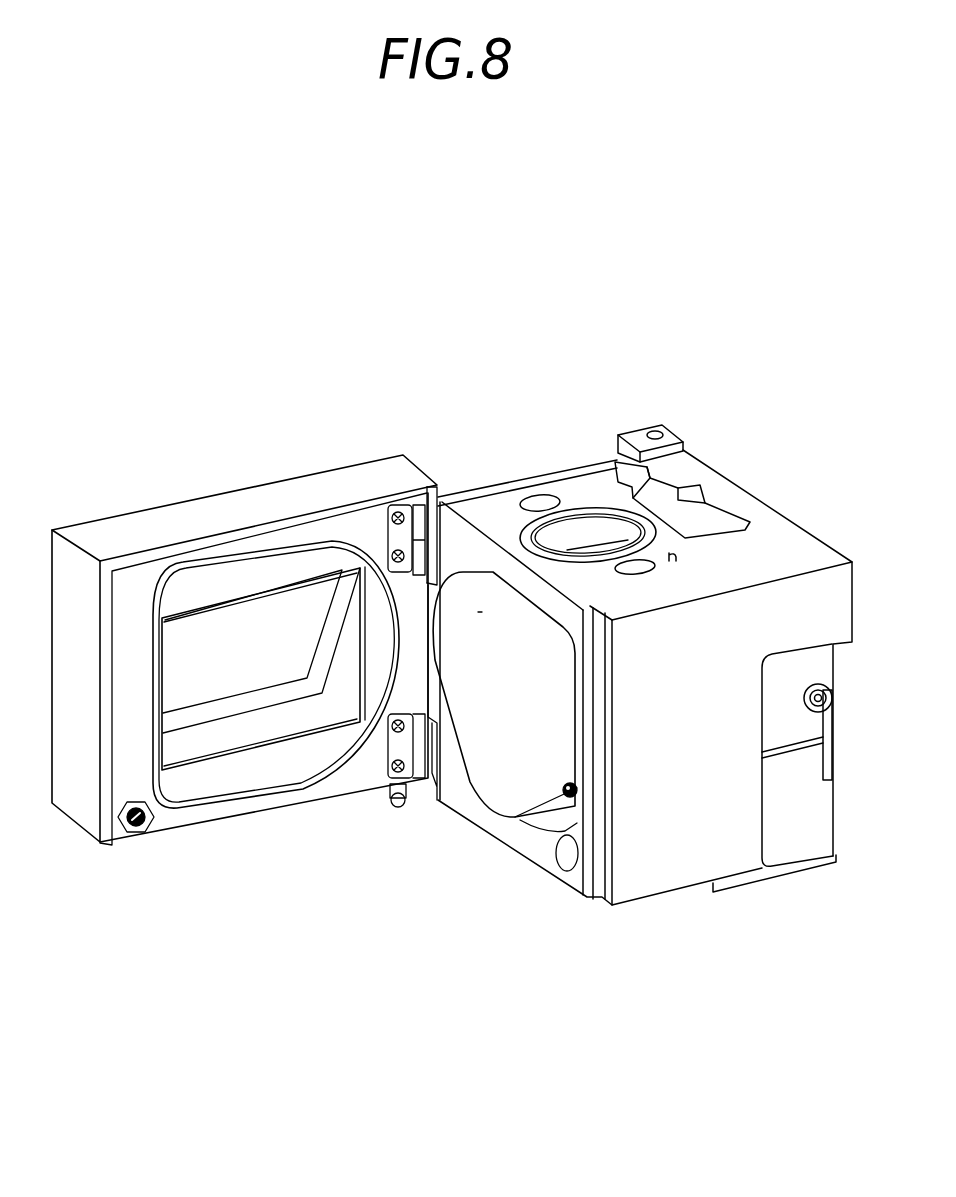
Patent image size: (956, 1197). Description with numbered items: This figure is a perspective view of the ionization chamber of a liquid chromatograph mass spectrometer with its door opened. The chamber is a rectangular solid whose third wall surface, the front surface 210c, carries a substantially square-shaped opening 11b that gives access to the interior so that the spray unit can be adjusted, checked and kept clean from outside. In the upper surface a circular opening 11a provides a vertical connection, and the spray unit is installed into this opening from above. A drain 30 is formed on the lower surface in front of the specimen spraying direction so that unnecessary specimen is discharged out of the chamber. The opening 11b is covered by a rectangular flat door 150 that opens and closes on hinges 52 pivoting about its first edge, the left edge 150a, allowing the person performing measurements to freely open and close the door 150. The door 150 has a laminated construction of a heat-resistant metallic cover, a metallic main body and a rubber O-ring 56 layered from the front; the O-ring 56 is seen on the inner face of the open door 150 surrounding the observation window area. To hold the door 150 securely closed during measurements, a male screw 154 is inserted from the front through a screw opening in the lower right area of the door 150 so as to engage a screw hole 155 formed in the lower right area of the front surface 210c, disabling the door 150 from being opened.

The circular opening 11a is at (590, 532).
The opening 11b is at (483, 607).
The third wall surface (front surface) 210c is at (513, 573).
The drain 30 is at (573, 785).
The screw hole 155 is at (568, 872).
The door 150 is at (182, 815).
The first edge (left edge) 150a is at (420, 648).
The rubber O-ring 56 is at (327, 777).
The male screw 154 is at (134, 836).
The hinges 52 is at (417, 547).